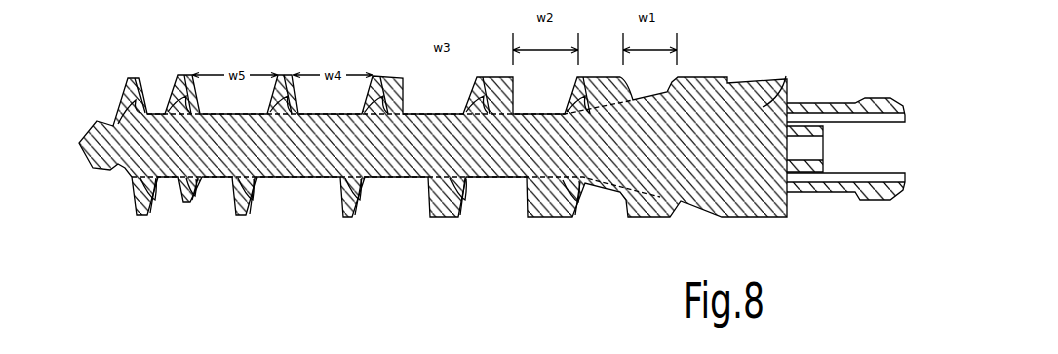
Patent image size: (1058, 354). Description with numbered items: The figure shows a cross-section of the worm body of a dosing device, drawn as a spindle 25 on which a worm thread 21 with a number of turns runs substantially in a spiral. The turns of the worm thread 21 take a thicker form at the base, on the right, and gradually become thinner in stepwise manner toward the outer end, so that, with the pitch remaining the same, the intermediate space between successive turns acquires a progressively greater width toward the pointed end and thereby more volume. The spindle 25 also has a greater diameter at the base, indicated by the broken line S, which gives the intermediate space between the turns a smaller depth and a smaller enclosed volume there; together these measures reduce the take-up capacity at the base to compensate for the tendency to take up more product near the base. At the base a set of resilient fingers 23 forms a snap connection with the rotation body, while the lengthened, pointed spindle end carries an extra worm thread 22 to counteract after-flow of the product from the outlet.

The worm thread 21 is at (182, 75).
The extra worm thread 22 is at (128, 95).
The resilient fingers 23 is at (890, 102).
The spindle 25 is at (786, 76).
The broken line S is at (713, 80).